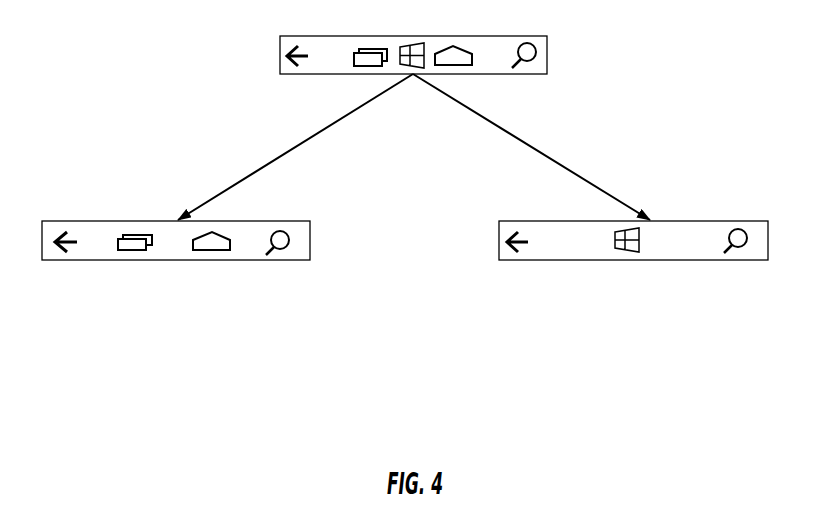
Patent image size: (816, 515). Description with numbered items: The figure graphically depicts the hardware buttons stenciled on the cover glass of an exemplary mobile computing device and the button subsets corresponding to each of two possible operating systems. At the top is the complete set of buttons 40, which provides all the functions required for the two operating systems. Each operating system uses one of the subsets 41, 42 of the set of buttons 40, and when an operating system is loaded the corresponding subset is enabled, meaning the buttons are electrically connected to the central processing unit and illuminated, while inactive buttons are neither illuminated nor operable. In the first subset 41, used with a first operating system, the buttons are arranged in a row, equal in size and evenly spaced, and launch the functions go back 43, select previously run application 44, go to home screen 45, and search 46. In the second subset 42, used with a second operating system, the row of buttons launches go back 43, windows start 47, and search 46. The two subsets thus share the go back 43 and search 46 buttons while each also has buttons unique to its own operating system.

The set of buttons 40 is at (279, 50).
The first button subset 41 is at (41, 236).
The second button subset 42 is at (769, 234).
The go back button 43 is at (67, 262).
The select previously run application button 44 is at (136, 262).
The go to home screen button 45 is at (212, 262).
The search button 46 is at (274, 262).
The windows start button 47 is at (630, 262).